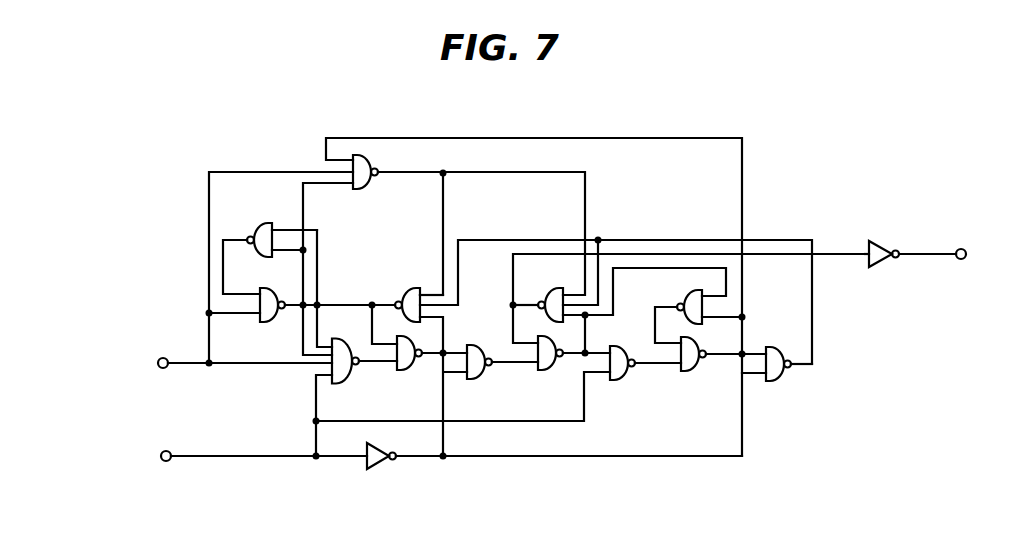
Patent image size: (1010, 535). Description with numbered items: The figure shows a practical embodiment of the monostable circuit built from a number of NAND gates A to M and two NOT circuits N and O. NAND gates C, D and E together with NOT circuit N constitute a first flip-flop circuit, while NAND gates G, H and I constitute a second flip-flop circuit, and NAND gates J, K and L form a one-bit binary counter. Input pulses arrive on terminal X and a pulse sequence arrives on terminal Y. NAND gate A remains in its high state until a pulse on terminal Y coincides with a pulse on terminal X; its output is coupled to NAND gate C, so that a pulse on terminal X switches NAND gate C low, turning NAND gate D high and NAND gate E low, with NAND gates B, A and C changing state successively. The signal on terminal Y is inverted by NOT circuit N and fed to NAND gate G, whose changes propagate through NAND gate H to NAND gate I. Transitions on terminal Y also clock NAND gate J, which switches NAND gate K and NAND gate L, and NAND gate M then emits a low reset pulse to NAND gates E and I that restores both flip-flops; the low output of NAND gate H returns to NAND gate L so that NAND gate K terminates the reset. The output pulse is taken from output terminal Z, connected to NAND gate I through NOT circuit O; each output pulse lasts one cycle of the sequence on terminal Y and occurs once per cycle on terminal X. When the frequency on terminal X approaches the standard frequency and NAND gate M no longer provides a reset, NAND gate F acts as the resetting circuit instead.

The NAND gate A is at (262, 322).
The NAND gate B is at (257, 223).
The NAND gate C is at (350, 383).
The NAND gate D is at (408, 370).
The NAND gate E is at (407, 288).
The NAND gate F is at (366, 187).
The NAND gate G is at (481, 378).
The NAND gate H is at (552, 370).
The NAND gate I is at (550, 291).
The NAND gate J is at (626, 380).
The NAND gate K is at (697, 371).
The NAND gate L is at (684, 293).
The NAND gate M is at (773, 381).
The NOT circuit N is at (377, 467).
The NOT circuit O is at (882, 264).
The terminal X is at (158, 363).
The terminal Y is at (161, 456).
The output terminal Z is at (966, 254).